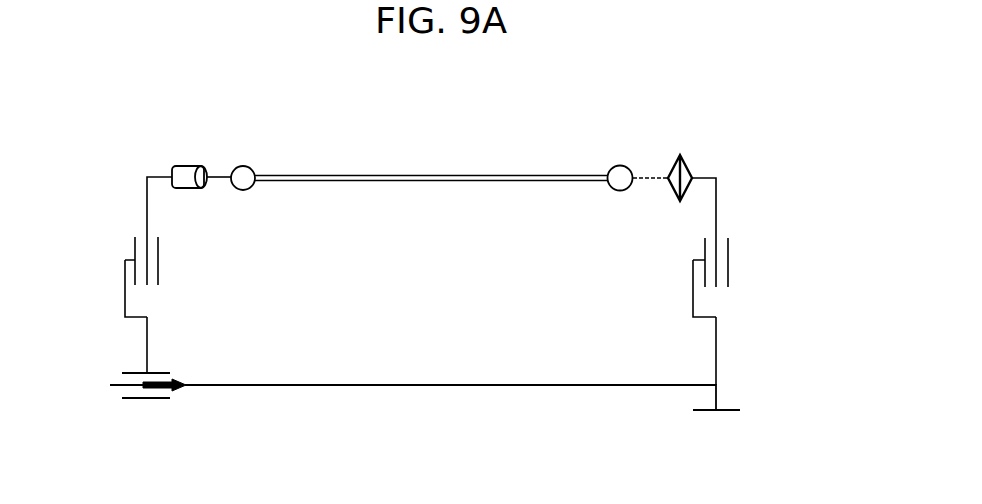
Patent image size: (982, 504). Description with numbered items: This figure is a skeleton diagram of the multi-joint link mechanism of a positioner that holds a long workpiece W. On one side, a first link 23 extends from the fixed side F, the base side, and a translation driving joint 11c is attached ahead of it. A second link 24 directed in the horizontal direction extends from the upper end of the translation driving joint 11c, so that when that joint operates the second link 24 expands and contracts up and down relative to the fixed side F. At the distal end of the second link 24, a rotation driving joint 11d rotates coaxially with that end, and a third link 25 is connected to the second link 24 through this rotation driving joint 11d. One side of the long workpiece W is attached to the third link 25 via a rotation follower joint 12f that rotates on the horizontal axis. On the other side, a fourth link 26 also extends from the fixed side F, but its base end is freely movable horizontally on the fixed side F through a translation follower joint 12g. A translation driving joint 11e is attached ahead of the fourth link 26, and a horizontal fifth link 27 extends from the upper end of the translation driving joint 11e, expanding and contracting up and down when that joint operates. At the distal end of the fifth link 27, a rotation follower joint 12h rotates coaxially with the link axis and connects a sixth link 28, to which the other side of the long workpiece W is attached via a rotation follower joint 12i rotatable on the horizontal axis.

The fifth link 27 is at (165, 177).
The rotation follower joint 12h is at (193, 166).
The sixth link 28 is at (223, 177).
The rotation follower joint 12i is at (252, 188).
The long workpiece W is at (417, 175).
The rotation follower joint 12f is at (623, 165).
The third link 25 is at (652, 178).
The rotation driving joint 11d is at (671, 200).
The second link 24 is at (702, 178).
The translation driving joint 11c is at (732, 245).
The first link 23 is at (718, 327).
The fixed side F is at (730, 410).
The translation driving joint 11e is at (133, 247).
The fourth link 26 is at (147, 345).
The translation follower joint 12g is at (128, 403).